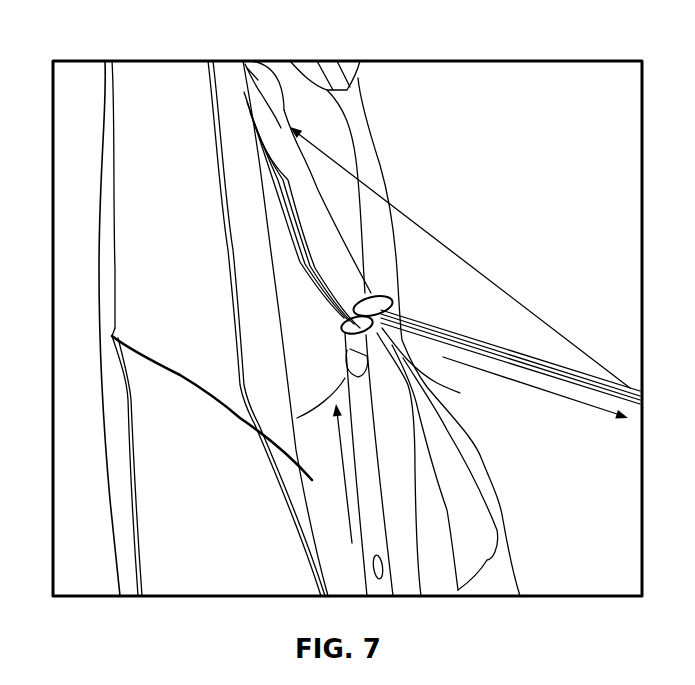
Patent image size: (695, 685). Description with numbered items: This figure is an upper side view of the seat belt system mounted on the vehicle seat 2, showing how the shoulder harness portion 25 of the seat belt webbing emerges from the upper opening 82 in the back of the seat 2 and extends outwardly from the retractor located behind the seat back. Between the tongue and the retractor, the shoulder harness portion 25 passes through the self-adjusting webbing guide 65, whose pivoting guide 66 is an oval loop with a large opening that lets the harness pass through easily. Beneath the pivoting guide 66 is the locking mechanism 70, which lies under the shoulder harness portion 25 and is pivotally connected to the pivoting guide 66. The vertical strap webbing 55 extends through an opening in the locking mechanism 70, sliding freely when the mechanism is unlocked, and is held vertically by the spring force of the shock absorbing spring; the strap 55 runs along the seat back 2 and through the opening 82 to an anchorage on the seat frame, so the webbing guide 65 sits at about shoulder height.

The vehicle seat 2 is at (143, 162).
The upper opening 82 is at (255, 82).
The shoulder harness portion 25 is at (323, 225).
The vertical strap webbing 55 is at (290, 230).
The pivoting guide 66 is at (384, 303).
The locking mechanism 70 is at (350, 357).
The self-adjusting webbing guide 65 is at (426, 380).